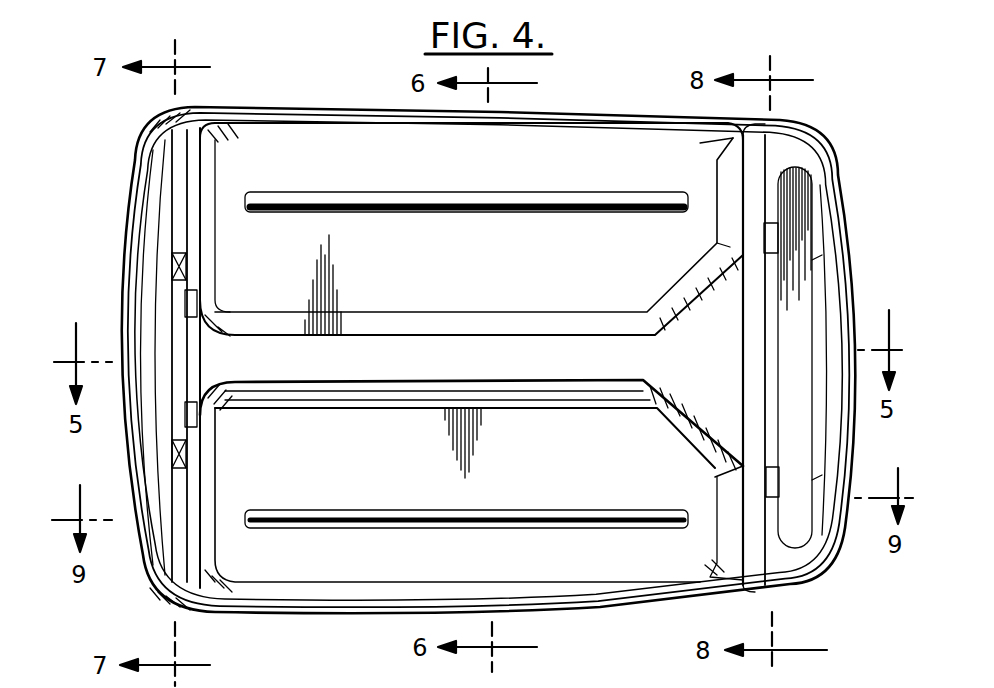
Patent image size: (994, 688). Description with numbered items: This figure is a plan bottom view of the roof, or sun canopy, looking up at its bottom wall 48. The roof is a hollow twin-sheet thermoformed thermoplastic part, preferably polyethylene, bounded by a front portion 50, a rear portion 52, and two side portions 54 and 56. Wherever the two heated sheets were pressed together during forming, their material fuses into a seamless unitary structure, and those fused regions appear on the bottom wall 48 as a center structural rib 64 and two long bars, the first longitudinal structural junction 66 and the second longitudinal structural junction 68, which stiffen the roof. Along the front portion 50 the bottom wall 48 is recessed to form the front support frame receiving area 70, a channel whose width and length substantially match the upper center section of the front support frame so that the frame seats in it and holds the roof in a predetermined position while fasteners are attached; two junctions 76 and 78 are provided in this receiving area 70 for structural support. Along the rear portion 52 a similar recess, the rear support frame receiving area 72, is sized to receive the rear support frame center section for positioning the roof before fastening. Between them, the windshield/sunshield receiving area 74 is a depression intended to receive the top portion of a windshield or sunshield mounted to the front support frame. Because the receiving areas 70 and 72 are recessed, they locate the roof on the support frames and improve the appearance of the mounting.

The bottom wall 48 is at (486, 369).
The front portion 50 is at (845, 218).
The rear portion 52 is at (125, 225).
The side portion 54 is at (598, 113).
The side portion 56 is at (570, 608).
The center structural rib 64 is at (404, 333).
The first longitudinal structural junction 66 is at (553, 212).
The second longitudinal structural junction 68 is at (556, 513).
The front support frame receiving area 70 is at (770, 337).
The rear support frame receiving area 72 is at (178, 357).
The windshield/sunshield receiving area 74 is at (842, 357).
The junction 76 is at (780, 250).
The junction 78 is at (780, 478).